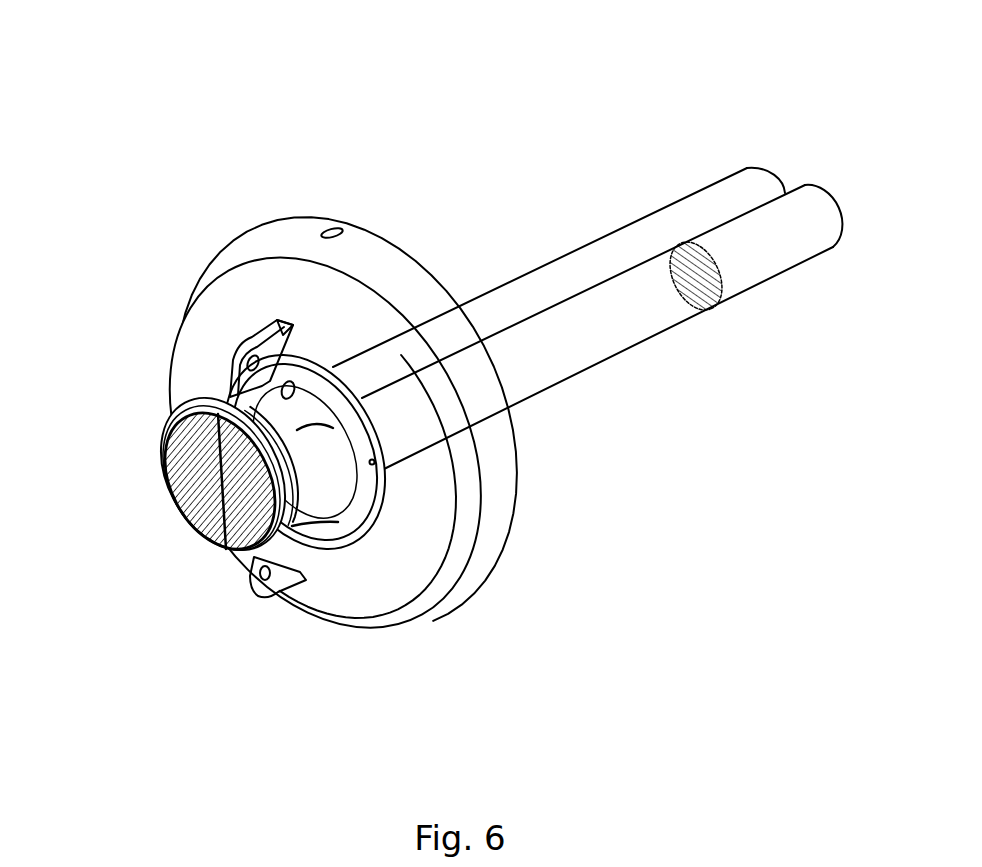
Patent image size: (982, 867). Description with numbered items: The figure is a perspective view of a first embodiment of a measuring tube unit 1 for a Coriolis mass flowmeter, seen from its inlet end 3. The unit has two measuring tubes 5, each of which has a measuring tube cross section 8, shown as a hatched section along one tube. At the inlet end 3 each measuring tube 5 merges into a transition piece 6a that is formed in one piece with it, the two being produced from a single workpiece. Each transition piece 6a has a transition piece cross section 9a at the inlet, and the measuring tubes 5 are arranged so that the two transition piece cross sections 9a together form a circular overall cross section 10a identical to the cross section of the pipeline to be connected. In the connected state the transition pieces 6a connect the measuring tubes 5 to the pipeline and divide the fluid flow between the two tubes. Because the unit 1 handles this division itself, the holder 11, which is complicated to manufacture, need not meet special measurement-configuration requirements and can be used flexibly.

The measuring tube unit 1 is at (528, 143).
The inlet end 3 is at (186, 391).
The measuring tube 5 is at (742, 223).
The transition piece 6a is at (207, 540).
The measuring tube cross section 8 is at (712, 300).
The transition piece cross section 9a is at (165, 440).
The overall cross section 10a is at (168, 503).
The holder 11 is at (307, 226).